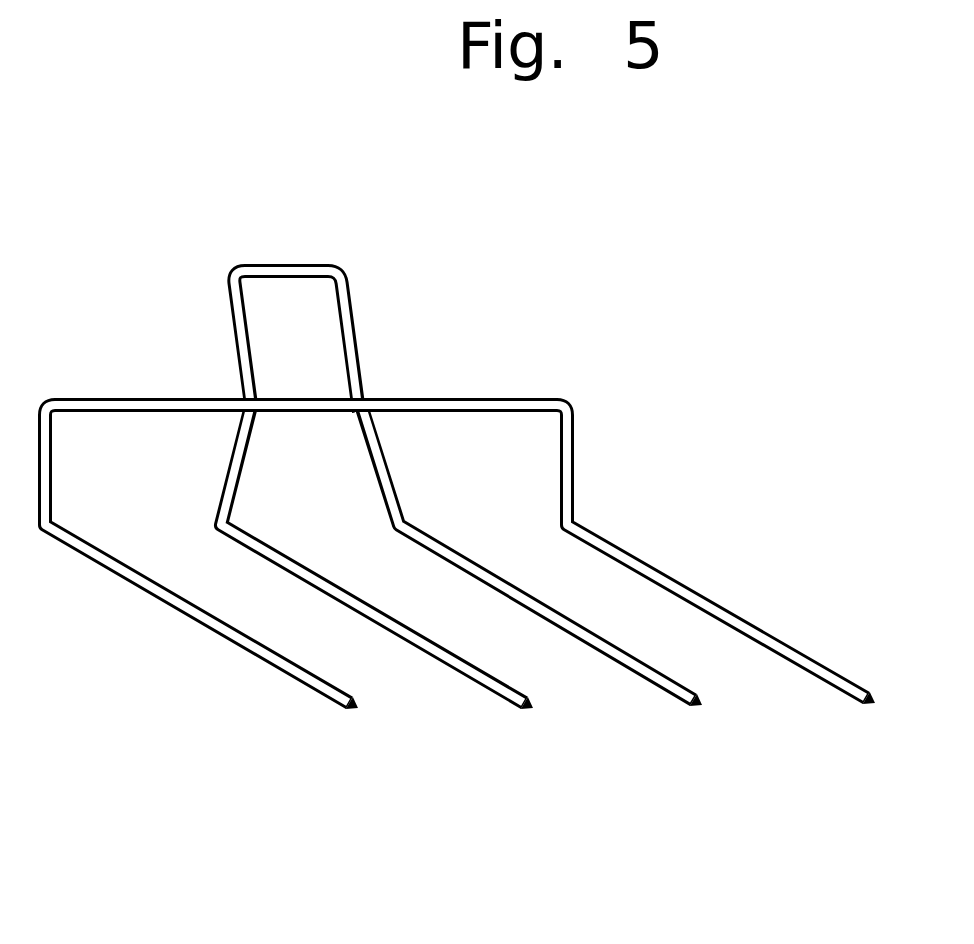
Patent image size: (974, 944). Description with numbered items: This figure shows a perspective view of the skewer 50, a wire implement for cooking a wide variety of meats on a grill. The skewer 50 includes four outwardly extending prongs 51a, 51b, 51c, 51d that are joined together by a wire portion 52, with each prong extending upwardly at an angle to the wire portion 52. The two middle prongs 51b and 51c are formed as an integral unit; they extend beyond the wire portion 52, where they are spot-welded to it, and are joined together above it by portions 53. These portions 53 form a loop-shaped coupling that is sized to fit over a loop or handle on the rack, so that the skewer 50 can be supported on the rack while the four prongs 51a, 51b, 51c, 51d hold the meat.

The skewer 50 is at (407, 382).
The prong 51a is at (323, 700).
The prong 51b is at (498, 700).
The prong 51c is at (668, 698).
The prong 51d is at (840, 695).
The wire portion 52 is at (513, 398).
The portions 53 is at (288, 266).